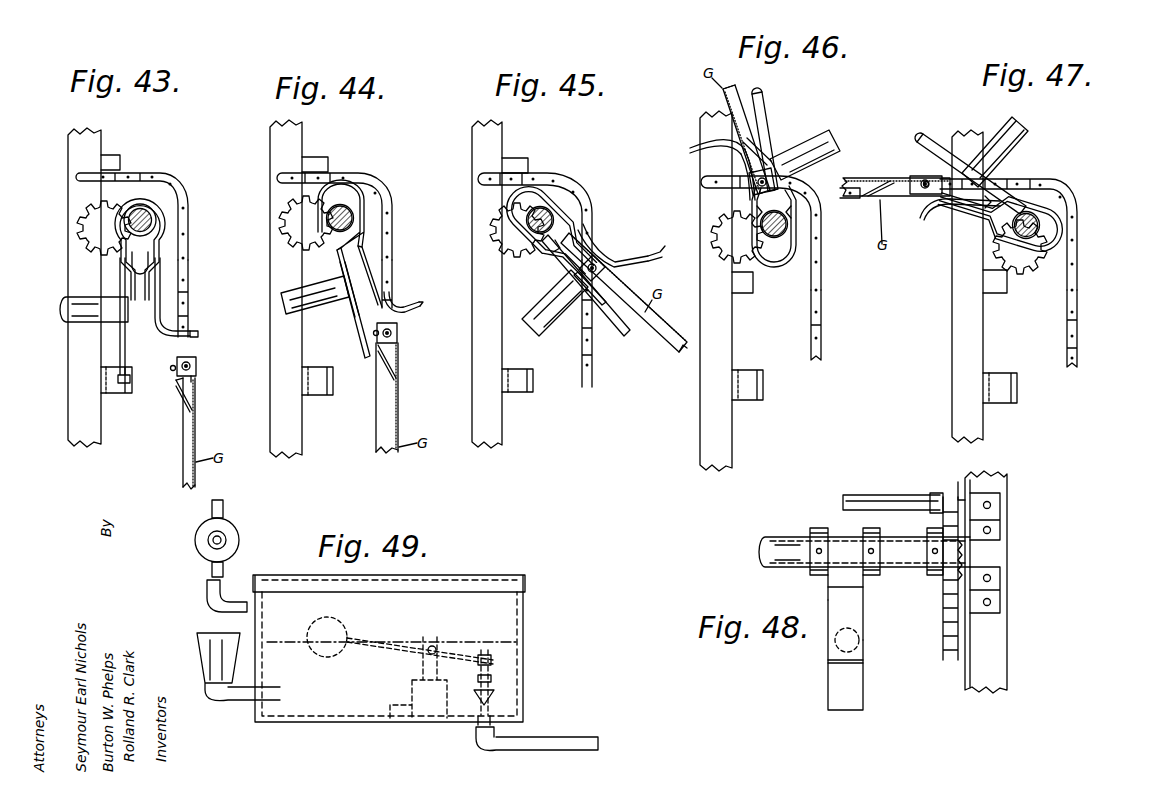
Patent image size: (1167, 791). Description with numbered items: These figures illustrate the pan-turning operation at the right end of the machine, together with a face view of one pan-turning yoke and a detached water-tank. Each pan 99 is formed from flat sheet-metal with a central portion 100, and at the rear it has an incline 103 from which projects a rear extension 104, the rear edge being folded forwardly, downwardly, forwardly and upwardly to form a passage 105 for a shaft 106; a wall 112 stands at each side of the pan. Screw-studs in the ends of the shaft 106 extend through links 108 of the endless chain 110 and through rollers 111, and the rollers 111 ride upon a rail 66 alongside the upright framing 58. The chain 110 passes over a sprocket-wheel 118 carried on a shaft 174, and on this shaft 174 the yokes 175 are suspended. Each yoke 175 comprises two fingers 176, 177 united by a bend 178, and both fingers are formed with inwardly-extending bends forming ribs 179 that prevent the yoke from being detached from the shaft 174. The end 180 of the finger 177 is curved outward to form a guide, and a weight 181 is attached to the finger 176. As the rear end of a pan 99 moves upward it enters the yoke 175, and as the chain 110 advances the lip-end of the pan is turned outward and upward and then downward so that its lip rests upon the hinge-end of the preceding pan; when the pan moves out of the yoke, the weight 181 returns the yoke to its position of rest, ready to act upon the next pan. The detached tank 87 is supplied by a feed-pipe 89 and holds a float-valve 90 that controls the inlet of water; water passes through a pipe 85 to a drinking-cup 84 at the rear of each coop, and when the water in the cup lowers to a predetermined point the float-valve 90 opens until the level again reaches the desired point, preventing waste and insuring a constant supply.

In FIG. 43, the side plate 58 is at (68, 388).
In FIG. 44, the side plate 58 is at (270, 400).
In FIG. 45, the side plate 58 is at (472, 397).
In FIG. 46, the side plate 58 is at (700, 412).
In FIG. 47, the side plate 58 is at (952, 398).
In FIG. 48, the side plate 58 is at (1010, 650).
In FIG. 48, the rail 66 is at (958, 490).
In FIG. 49, the drinking-cup 84 is at (237, 527).
In FIG. 49, the pipe 85 is at (224, 503).
In FIG. 49, the tank 87 is at (525, 628).
In FIG. 49, the feed-pipe 89 is at (566, 737).
In FIG. 49, the float-valve 90 is at (496, 662).
In FIG. 43, the pan 99 is at (183, 457).
In FIG. 44, the pan 99 is at (376, 444).
In FIG. 45, the pan 99 is at (656, 326).
In FIG. 46, the pan 99 is at (722, 92).
In FIG. 47, the pan 99 is at (870, 178).
In FIG. 48, the pan 99 is at (877, 495).
In FIG. 43, the central portion 100 is at (183, 485).
In FIG. 44, the central portion 100 is at (378, 418).
In FIG. 45, the central portion 100 is at (662, 356).
In FIG. 46, the central portion 100 is at (738, 92).
In FIG. 43, the incline 103 is at (180, 400).
In FIG. 44, the incline 103 is at (383, 365).
In FIG. 45, the incline 103 is at (606, 308).
In FIG. 46, the incline 103 is at (758, 148).
In FIG. 47, the incline 103 is at (870, 200).
In FIG. 43, the rear extension 104 is at (177, 382).
In FIG. 43, the passage 105 is at (194, 380).
In FIG. 43, the shaft 106 is at (197, 366).
In FIG. 44, the shaft 106 is at (398, 335).
In FIG. 45, the shaft 106 is at (600, 258).
In FIG. 46, the shaft 106 is at (749, 180).
In FIG. 47, the shaft 106 is at (921, 175).
In FIG. 43, the link 108 is at (189, 282).
In FIG. 44, the link 108 is at (393, 250).
In FIG. 45, the link 108 is at (587, 389).
In FIG. 46, the link 108 is at (816, 362).
In FIG. 47, the link 108 is at (1079, 366).
In FIG. 43, the endless chain 110 is at (180, 184).
In FIG. 44, the endless chain 110 is at (368, 184).
In FIG. 45, the endless chain 110 is at (566, 184).
In FIG. 46, the endless chain 110 is at (823, 218).
In FIG. 47, the endless chain 110 is at (1072, 192).
In FIG. 48, the endless chain 110 is at (943, 628).
In FIG. 43, the roller 111 is at (170, 368).
In FIG. 44, the roller 111 is at (373, 333).
In FIG. 47, the roller 111 is at (928, 178).
In FIG. 48, the roller 111 is at (932, 492).
In FIG. 43, the wall 112 is at (183, 438).
In FIG. 44, the wall 112 is at (376, 404).
In FIG. 45, the wall 112 is at (680, 360).
In FIG. 46, the wall 112 is at (742, 142).
In FIG. 47, the wall 112 is at (848, 178).
In FIG. 43, the sprocket-wheel 118 is at (88, 222).
In FIG. 44, the sprocket-wheel 118 is at (290, 224).
In FIG. 45, the sprocket-wheel 118 is at (495, 222).
In FIG. 46, the sprocket-wheel 118 is at (712, 230).
In FIG. 47, the sprocket-wheel 118 is at (1025, 276).
In FIG. 48, the sprocket-wheel 118 is at (947, 578).
In FIG. 43, the shaft 174 is at (150, 220).
In FIG. 44, the shaft 174 is at (325, 205).
In FIG. 45, the shaft 174 is at (513, 235).
In FIG. 46, the shaft 174 is at (771, 284).
In FIG. 47, the shaft 174 is at (1022, 200).
In FIG. 43, the yoke 175 is at (123, 272).
In FIG. 44, the yoke 175 is at (358, 200).
In FIG. 45, the yoke 175 is at (546, 193).
In FIG. 46, the yoke 175 is at (797, 240).
In FIG. 47, the yoke 175 is at (1055, 218).
In FIG. 48, the yoke 175 is at (832, 592).
In FIG. 43, the finger 176 is at (127, 348).
In FIG. 44, the finger 176 is at (362, 345).
In FIG. 45, the finger 176 is at (605, 322).
In FIG. 46, the finger 176 is at (766, 108).
In FIG. 47, the finger 176 is at (922, 135).
In FIG. 48, the finger 176 is at (842, 712).
In FIG. 43, the finger 177 is at (162, 303).
In FIG. 44, the finger 177 is at (393, 272).
In FIG. 45, the finger 177 is at (592, 232).
In FIG. 46, the finger 177 is at (748, 192).
In FIG. 47, the finger 177 is at (965, 222).
In FIG. 48, the finger 177 is at (855, 615).
In FIG. 43, the bend 178 is at (141, 203).
In FIG. 44, the bend 178 is at (342, 180).
In FIG. 45, the bend 178 is at (508, 201).
In FIG. 46, the bend 178 is at (776, 270).
In FIG. 47, the bend 178 is at (1050, 248).
In FIG. 48, the bend 178 is at (845, 532).
In FIG. 43, the rib 179 is at (138, 282).
In FIG. 44, the rib 179 is at (366, 236).
In FIG. 45, the rib 179 is at (590, 212).
In FIG. 46, the rib 179 is at (752, 212).
In FIG. 47, the rib 179 is at (1025, 170).
In FIG. 48, the rib 179 is at (852, 589).
In FIG. 43, the end 180 is at (200, 336).
In FIG. 44, the end 180 is at (423, 306).
In FIG. 45, the end 180 is at (663, 254).
In FIG. 46, the end 180 is at (690, 150).
In FIG. 47, the end 180 is at (920, 222).
In FIG. 48, the end 180 is at (850, 663).
In FIG. 43, the weight 181 is at (62, 328).
In FIG. 44, the weight 181 is at (290, 318).
In FIG. 45, the weight 181 is at (537, 332).
In FIG. 46, the weight 181 is at (815, 139).
In FIG. 47, the weight 181 is at (996, 134).
In FIG. 48, the weight 181 is at (835, 645).